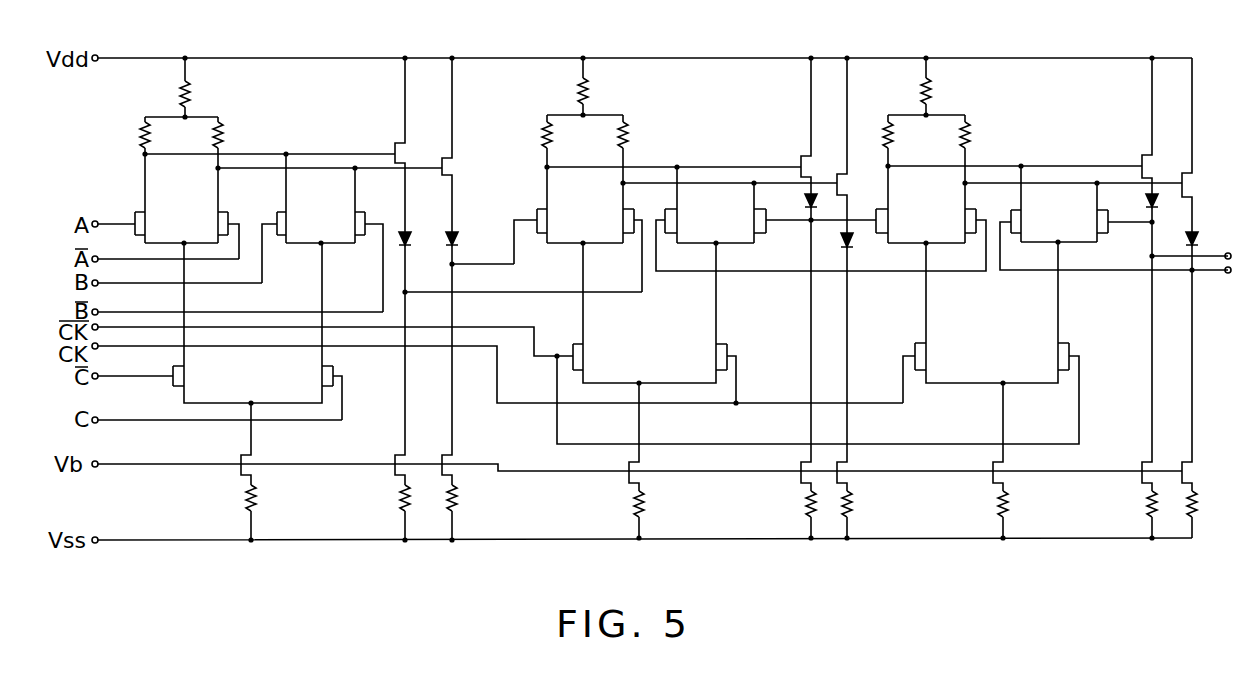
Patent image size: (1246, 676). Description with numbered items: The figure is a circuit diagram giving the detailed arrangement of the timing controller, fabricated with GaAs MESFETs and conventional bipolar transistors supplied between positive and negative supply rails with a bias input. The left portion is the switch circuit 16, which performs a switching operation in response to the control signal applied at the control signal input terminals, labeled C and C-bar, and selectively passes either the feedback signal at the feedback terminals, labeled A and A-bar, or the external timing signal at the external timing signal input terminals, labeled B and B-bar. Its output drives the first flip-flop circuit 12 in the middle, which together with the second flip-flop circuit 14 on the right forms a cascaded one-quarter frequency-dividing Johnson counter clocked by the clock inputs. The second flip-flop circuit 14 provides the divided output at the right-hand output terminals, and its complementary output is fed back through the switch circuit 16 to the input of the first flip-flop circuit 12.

The switch circuit 16 is at (298, 57).
The first flip-flop circuit 12 is at (701, 57).
The second flip-flop circuit 14 is at (1043, 57).